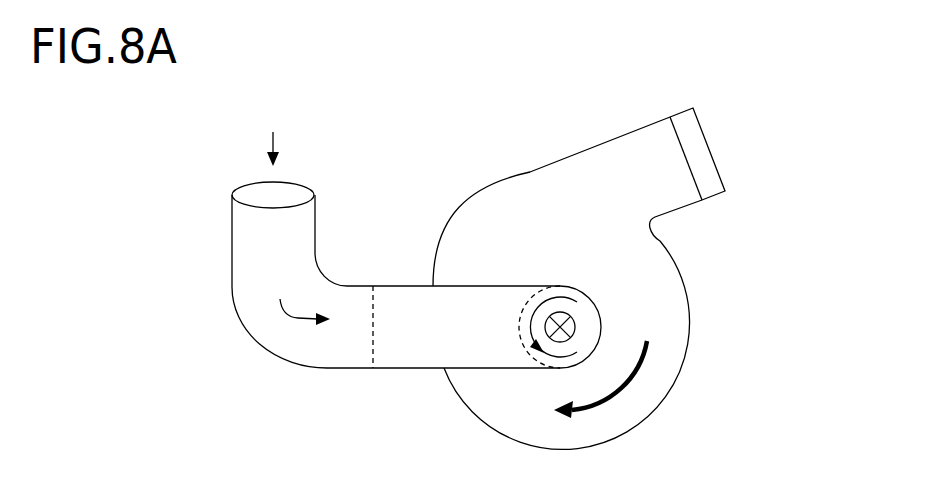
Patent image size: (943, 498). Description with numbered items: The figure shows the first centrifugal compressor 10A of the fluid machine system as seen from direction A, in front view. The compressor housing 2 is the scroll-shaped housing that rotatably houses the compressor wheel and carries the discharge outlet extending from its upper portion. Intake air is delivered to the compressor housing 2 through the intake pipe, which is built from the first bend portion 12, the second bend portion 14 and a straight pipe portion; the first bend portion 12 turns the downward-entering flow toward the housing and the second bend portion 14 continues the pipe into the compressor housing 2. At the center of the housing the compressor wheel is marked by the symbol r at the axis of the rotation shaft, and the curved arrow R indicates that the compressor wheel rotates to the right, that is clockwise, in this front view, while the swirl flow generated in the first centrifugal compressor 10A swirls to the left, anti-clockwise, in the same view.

The first centrifugal compressor 10A is at (520, 250).
The compressor housing 2 is at (712, 328).
The first bend portion 12 is at (247, 329).
The second bend portion 14 is at (403, 369).
The impeller shaft center r is at (582, 302).
The arrow R is at (621, 384).